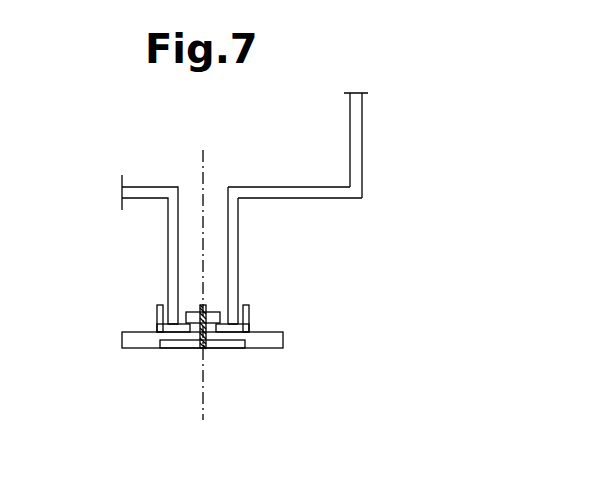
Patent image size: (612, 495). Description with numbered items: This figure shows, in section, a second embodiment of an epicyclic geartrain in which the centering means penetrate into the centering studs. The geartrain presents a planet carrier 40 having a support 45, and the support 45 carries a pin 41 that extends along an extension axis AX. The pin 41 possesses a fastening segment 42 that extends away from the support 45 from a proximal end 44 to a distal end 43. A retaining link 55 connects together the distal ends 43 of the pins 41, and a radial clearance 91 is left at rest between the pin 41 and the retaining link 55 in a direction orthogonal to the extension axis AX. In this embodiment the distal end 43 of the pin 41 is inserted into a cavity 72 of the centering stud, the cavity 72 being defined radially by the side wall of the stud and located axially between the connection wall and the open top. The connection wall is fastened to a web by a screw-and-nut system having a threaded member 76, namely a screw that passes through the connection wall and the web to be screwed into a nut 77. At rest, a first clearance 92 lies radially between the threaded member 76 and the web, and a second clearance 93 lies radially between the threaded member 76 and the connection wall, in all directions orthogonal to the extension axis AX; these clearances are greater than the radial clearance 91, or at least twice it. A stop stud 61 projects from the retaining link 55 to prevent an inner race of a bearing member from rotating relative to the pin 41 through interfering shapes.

The planet carrier 40 is at (372, 140).
The pin 41 is at (261, 259).
The fastening segment 42 is at (238, 216).
The distal end 43 is at (272, 292).
The proximal end 44 is at (190, 186).
The support 45 is at (283, 187).
The retaining link 55 is at (116, 343).
The stop stud 61 is at (157, 323).
The cavity 72 is at (162, 296).
The threaded member 76 is at (215, 328).
The nut 77 is at (212, 306).
The radial clearance 91 is at (250, 312).
The first clearance 92 is at (224, 349).
The second clearance 93 is at (197, 349).
The extension axis AX is at (202, 400).